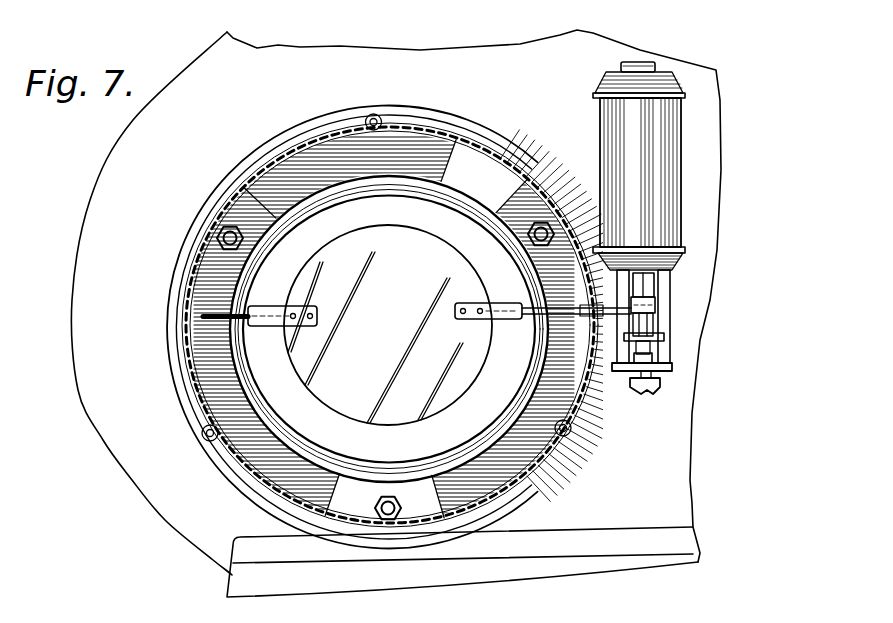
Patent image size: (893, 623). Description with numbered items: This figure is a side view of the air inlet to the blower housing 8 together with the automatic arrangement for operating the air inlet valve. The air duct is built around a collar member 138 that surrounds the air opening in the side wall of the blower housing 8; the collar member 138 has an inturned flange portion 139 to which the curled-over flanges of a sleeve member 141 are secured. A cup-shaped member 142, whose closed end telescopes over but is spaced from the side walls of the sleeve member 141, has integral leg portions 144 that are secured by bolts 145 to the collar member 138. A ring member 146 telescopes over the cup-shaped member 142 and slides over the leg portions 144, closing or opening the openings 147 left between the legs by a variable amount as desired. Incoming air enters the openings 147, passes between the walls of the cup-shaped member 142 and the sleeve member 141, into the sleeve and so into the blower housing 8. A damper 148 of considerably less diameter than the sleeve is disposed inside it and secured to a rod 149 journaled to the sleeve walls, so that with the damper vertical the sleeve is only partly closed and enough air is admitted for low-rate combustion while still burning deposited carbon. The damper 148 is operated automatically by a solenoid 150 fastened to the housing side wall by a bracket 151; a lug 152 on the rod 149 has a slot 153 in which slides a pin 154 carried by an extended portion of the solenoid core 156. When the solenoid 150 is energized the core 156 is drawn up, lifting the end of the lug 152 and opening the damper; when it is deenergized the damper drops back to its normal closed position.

The blower housing 8 is at (113, 186).
The collar member 138 is at (460, 167).
The inturned flange portion 139 is at (388, 176).
The sleeve member 141 is at (528, 486).
The cup-shaped member 142 is at (236, 470).
The leg portions 144 is at (248, 208).
The bolts 145 is at (217, 238).
The ring member 146 is at (190, 276).
The openings 147 is at (322, 133).
The damper 148 is at (300, 367).
The rod 149 is at (600, 388).
The solenoid 150 is at (680, 170).
The bracket 151 is at (660, 278).
The lug 152 is at (655, 311).
The slot 153 is at (655, 321).
The pin 154 is at (660, 338).
The solenoid core 156 is at (652, 64).